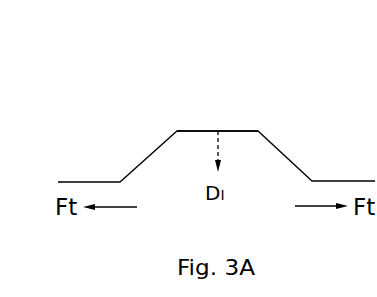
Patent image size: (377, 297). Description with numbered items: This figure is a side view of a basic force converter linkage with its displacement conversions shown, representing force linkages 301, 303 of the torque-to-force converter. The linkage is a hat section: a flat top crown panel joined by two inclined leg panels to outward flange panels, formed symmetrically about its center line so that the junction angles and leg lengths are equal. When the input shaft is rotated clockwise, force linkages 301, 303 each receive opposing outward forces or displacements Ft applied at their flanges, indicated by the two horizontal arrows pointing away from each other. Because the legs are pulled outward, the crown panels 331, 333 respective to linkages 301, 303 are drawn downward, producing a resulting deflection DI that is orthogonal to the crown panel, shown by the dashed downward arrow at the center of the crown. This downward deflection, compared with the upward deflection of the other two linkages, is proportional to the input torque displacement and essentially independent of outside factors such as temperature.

The force linkage 301 is at (140, 148).
The force linkage 303 is at (218, 150).
The crown panel 331 is at (241, 77).
The crown panel 333 is at (281, 77).